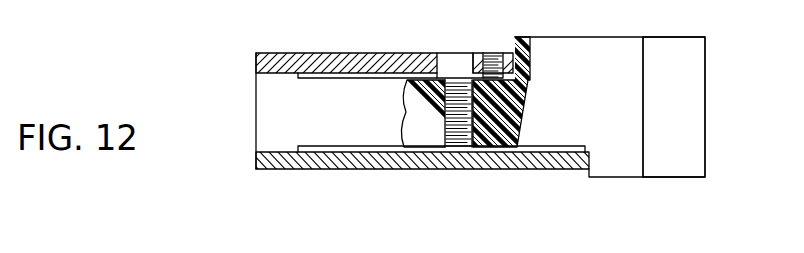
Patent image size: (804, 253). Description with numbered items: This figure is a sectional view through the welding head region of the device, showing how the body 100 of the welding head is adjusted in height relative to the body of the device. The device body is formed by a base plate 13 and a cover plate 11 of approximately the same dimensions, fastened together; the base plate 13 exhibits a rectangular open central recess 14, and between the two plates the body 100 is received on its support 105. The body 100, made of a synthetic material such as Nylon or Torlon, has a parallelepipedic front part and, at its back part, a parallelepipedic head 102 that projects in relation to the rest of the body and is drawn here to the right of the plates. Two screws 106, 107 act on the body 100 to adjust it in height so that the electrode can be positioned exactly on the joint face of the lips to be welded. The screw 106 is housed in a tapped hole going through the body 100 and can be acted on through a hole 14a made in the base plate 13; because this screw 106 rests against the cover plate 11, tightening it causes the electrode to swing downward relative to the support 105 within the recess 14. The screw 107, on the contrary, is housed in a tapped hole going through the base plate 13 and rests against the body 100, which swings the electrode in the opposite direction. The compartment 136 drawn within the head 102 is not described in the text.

The support 105 is at (272, 145).
The base plate 13 is at (336, 62).
The hole 14a is at (453, 67).
The screw 107 is at (496, 62).
The rectangular open central recess 14 is at (372, 148).
The cover plate 11 is at (315, 166).
The body 100 is at (510, 126).
The screw 106 is at (460, 108).
The parallelepipedic head 102 is at (623, 128).
The compartment 136 is at (687, 133).